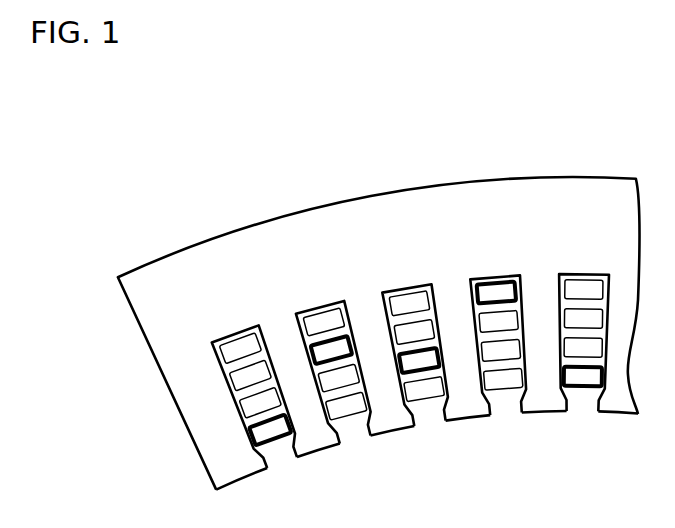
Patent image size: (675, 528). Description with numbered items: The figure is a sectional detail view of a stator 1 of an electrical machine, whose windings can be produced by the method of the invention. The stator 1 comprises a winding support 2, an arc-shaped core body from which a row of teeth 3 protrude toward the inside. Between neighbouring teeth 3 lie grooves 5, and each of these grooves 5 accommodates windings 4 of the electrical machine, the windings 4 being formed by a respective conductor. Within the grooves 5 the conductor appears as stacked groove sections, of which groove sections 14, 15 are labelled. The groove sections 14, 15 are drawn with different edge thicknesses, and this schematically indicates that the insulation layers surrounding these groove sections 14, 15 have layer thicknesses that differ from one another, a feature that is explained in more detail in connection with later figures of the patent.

The stator 1 is at (379, 317).
The winding support 2 is at (305, 230).
The teeth 3 is at (470, 412).
The windings 4 is at (432, 420).
The grooves 5 is at (598, 264).
The groove section 14 is at (523, 305).
The groove section 15 is at (492, 290).